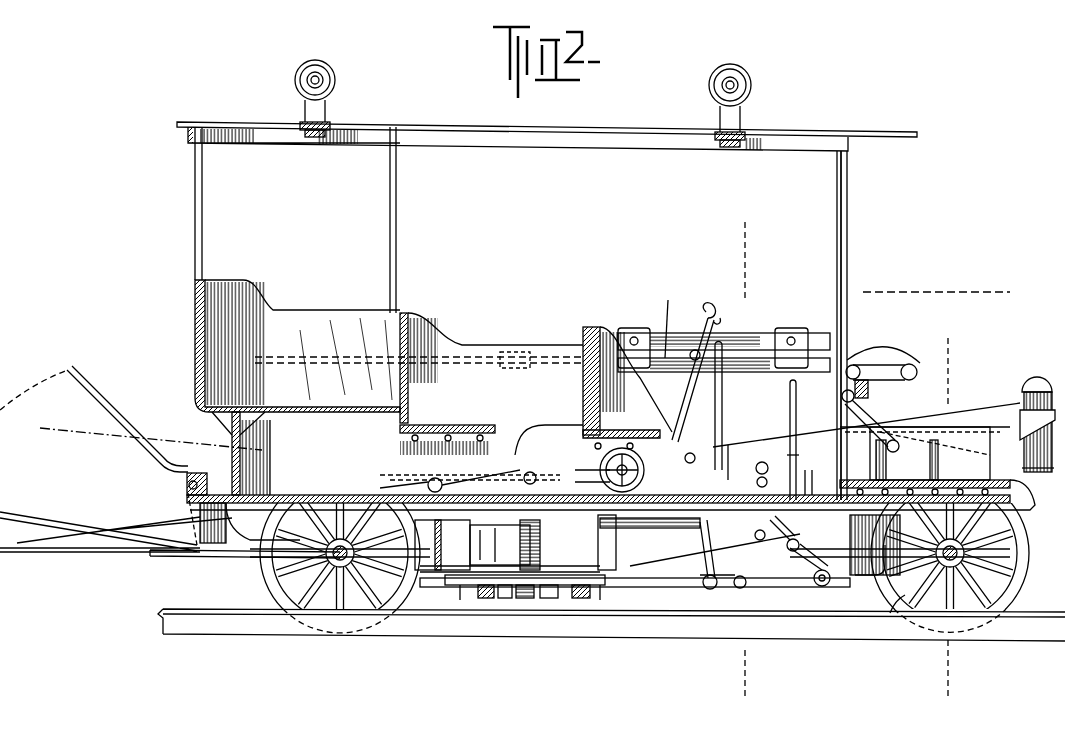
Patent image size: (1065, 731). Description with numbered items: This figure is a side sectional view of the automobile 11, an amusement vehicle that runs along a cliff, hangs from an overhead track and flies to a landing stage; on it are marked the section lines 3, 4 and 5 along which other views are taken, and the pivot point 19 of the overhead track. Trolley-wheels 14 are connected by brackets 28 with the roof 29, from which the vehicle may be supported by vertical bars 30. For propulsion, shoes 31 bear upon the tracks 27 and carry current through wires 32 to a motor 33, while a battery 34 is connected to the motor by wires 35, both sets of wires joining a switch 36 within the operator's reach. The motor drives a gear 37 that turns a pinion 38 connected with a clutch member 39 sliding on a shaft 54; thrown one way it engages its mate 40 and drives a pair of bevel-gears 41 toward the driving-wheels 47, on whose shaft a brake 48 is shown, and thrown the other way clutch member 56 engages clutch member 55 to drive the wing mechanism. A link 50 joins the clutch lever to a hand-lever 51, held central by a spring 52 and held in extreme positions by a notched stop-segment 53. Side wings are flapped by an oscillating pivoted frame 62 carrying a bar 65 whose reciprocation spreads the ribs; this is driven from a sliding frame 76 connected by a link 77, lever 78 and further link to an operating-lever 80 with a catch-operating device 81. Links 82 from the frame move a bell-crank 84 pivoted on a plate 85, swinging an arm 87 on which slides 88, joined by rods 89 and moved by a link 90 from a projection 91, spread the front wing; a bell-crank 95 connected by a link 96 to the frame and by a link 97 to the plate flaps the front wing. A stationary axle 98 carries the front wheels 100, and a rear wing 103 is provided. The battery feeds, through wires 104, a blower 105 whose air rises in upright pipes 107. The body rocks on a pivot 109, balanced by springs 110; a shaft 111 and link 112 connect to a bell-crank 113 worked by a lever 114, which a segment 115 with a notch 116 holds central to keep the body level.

The section line 3 3 is at (535, 470).
The section line 4 4 is at (947, 519).
The section line 5 5 is at (743, 462).
The automobile 11 is at (440, 345).
The trolley-wheels 14 is at (335, 80).
The pivot point 19 is at (655, 520).
The tracks 27 is at (193, 609).
The brackets 28 is at (326, 112).
The roof 29 is at (582, 131).
The vertical bars 30 is at (202, 228).
The shoes 31 is at (1012, 611).
The wires 32 is at (712, 565).
The motor 33 is at (510, 535).
The battery 34 is at (408, 445).
The wires 35 is at (520, 425).
The switch 36 is at (632, 450).
The gear 37 is at (545, 535).
The pinion 38 is at (526, 598).
The clutch member 39 is at (550, 598).
The clutch member 40 is at (582, 598).
The bevel-gears 41 is at (610, 590).
The driving-wheels 47 is at (272, 605).
The brake 48 is at (340, 540).
The link 50 is at (700, 560).
The hand-lever 51 is at (797, 402).
The spring 52 is at (780, 545).
The stop-segment 53 is at (810, 470).
The shaft 54 is at (505, 598).
The clutch member 55 is at (488, 590).
The clutch member 56 is at (486, 598).
The pivoted frame 62 is at (677, 588).
The bar 65 is at (740, 588).
The sliding frame 76 is at (938, 478).
The link 77 is at (960, 478).
The lever 78 is at (912, 478).
The operating-lever 80 is at (708, 318).
The catch-operating device 81 is at (722, 323).
The links 82 is at (870, 420).
The bell-crank 84 is at (868, 378).
The plate 85 is at (890, 364).
The arm 87 is at (764, 372).
The slides 88 is at (636, 328).
The rods 89 is at (655, 316).
The link 90 is at (862, 348).
The projection 91 is at (912, 368).
The bell-crank 95 is at (766, 480).
The link 96 is at (744, 539).
The link 97 is at (797, 455).
The stationary axle 98 is at (880, 545).
The front wheels 100 is at (890, 613).
The rear wing 103 is at (72, 540).
The wires 104 is at (568, 425).
The blower 105 is at (600, 455).
The upright pipes 107 is at (837, 232).
The pivot 109 is at (430, 480).
The springs 110 is at (252, 556).
The shaft 111 is at (823, 586).
The link 112 is at (812, 580).
The bell-crank 113 is at (763, 462).
The lever 114 is at (713, 374).
The segment 115 is at (700, 440).
The notch 116 is at (729, 445).